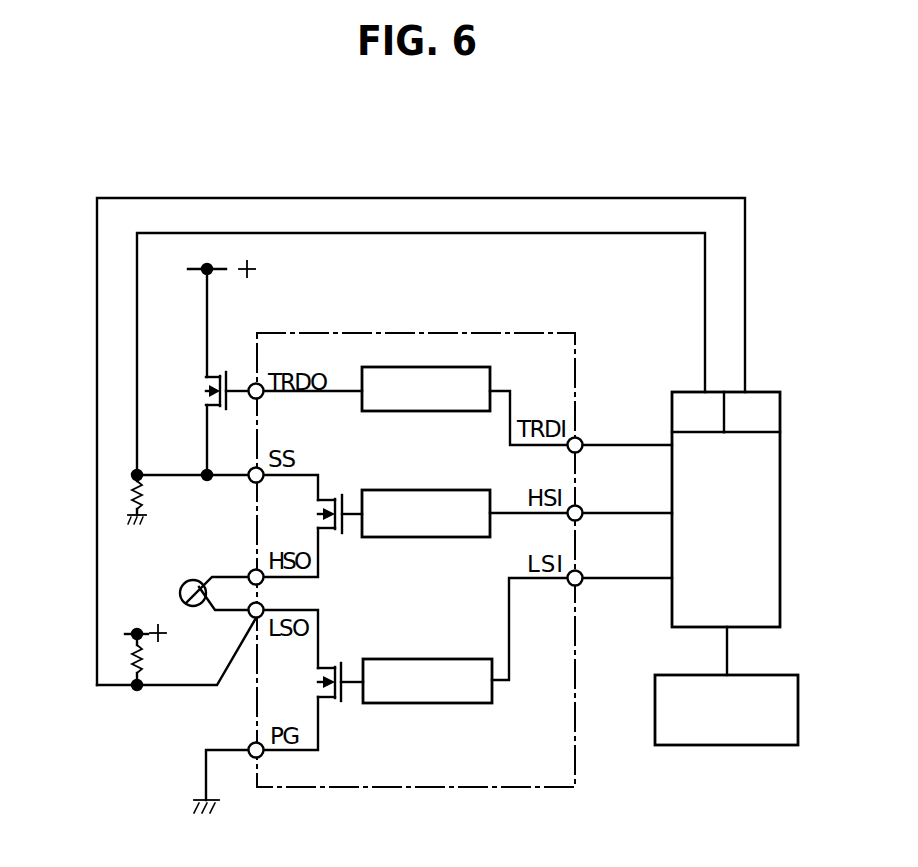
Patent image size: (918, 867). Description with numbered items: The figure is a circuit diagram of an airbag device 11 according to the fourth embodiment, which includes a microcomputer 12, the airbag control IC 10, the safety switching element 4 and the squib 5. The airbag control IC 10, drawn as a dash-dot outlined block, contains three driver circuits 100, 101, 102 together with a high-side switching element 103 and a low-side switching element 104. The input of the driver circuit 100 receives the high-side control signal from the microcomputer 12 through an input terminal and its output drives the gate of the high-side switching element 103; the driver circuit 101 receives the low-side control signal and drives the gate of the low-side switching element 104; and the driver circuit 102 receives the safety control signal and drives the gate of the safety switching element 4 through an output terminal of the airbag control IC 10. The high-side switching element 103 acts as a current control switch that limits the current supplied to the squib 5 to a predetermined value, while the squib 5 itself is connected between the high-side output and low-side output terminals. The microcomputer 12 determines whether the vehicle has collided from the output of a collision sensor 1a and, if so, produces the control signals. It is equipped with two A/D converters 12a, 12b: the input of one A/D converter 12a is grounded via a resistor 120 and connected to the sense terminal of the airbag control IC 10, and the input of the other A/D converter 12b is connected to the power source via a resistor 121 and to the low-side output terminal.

The airbag device 11 is at (645, 165).
The airbag control IC 10 is at (428, 333).
The safety switching element 4 is at (213, 383).
The squib 5 is at (186, 584).
The resistor 120 is at (130, 492).
The resistor 121 is at (130, 662).
The driver circuit 102 is at (437, 367).
The driver circuit 100 is at (418, 490).
The driver circuit 101 is at (430, 659).
The high-side switching element 103 is at (325, 498).
The low-side switching element 104 is at (327, 668).
The microcomputer 12 is at (750, 483).
The A/D converter 12a is at (693, 390).
The A/D converter 12b is at (760, 390).
The collision sensor 1a is at (772, 673).